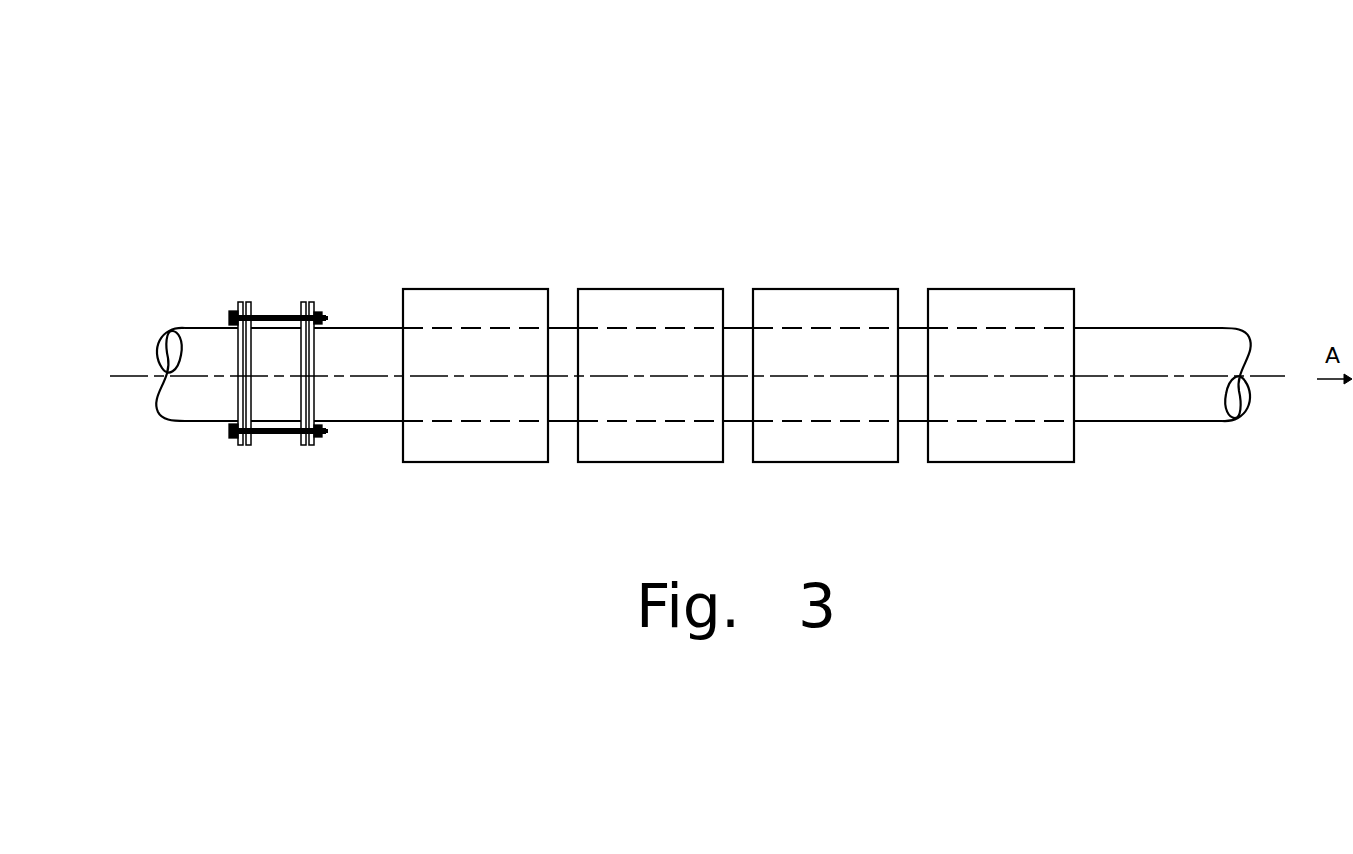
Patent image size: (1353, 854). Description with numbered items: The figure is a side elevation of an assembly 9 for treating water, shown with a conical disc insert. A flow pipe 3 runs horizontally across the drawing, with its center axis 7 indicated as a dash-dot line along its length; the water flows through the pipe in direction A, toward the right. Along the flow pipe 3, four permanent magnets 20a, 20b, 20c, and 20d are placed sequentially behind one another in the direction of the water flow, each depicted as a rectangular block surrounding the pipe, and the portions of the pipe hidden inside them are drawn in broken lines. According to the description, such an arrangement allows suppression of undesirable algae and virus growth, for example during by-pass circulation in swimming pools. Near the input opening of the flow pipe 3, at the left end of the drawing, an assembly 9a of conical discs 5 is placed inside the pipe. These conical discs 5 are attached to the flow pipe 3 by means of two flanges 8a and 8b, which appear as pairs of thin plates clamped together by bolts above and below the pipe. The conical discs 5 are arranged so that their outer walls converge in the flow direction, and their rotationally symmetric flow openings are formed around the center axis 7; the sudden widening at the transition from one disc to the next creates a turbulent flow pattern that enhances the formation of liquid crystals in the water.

The flow pipe 3 is at (1150, 330).
The conical discs 5 is at (274, 316).
The center axis 7 is at (1250, 378).
The flange 8a is at (238, 445).
The flange 8b is at (310, 445).
The assembly 9 is at (940, 176).
The assembly of conical discs 9a is at (315, 365).
The permanent magnet 20a is at (513, 463).
The permanent magnet 20b is at (688, 463).
The permanent magnet 20c is at (864, 463).
The permanent magnet 20d is at (1038, 463).